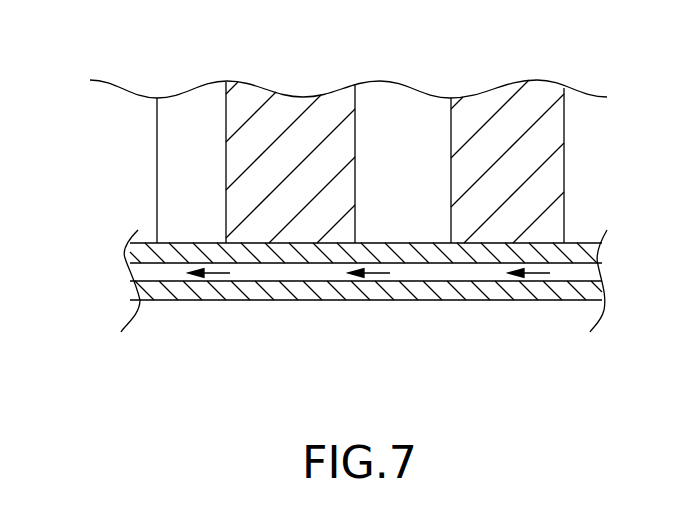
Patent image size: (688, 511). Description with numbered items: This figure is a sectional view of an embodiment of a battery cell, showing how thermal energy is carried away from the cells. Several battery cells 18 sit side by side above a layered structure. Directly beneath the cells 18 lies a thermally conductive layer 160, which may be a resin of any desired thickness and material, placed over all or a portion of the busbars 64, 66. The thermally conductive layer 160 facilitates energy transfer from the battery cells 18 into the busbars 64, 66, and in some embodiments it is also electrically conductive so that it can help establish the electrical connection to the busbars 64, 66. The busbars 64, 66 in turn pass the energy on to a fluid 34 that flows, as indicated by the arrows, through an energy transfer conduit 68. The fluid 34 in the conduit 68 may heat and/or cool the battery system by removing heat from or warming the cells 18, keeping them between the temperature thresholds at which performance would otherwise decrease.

The battery cells 18 is at (170, 182).
The thermally conductive layer 160 is at (144, 254).
The energy transfer conduit 68 is at (305, 292).
The fluid 34 is at (380, 275).
The busbar 64 is at (329, 329).
The busbar 66 is at (329, 329).